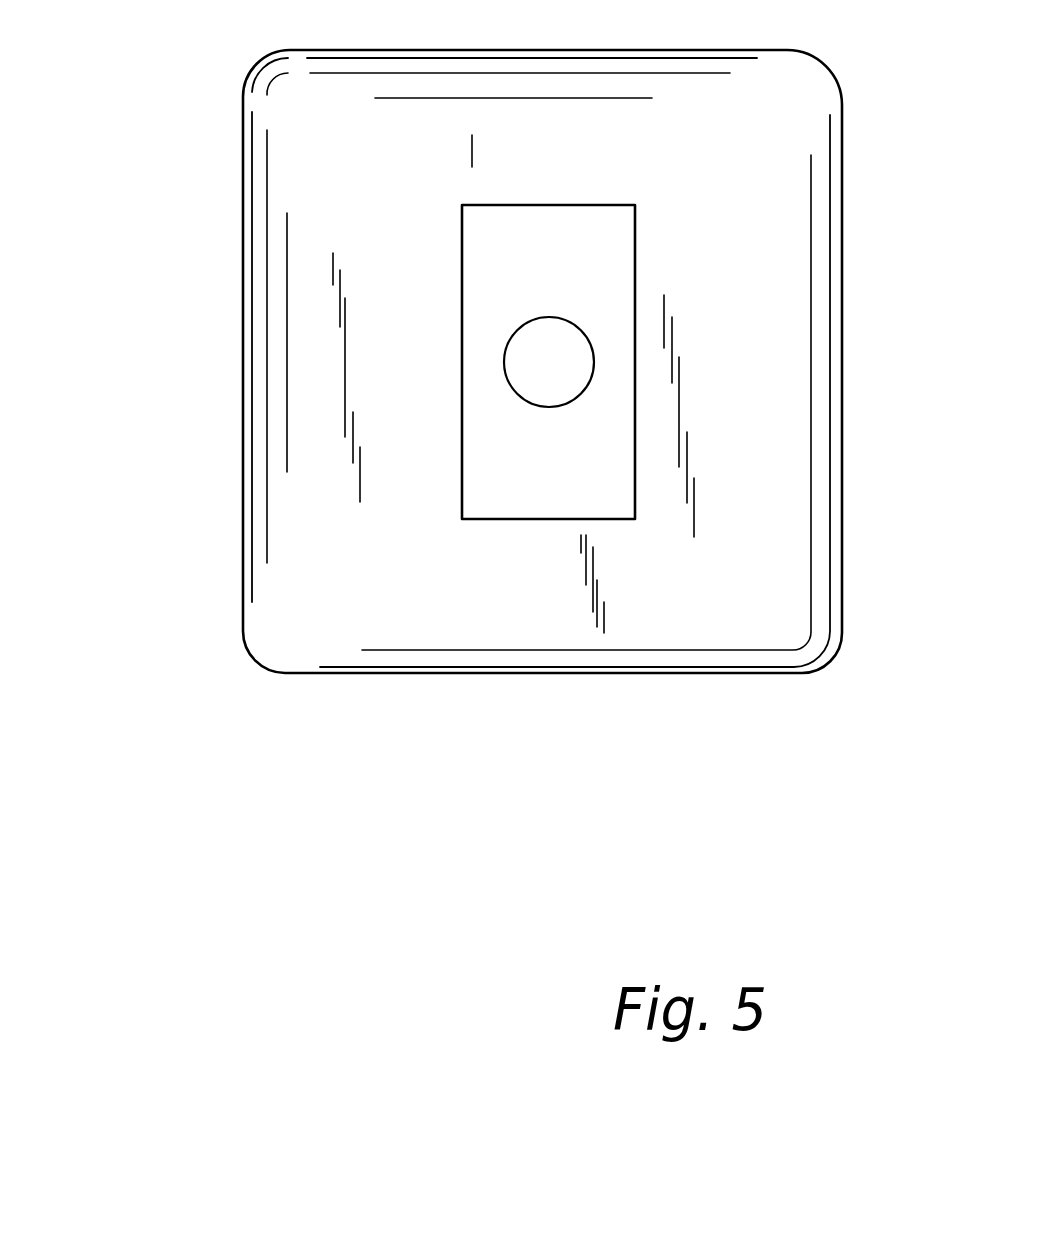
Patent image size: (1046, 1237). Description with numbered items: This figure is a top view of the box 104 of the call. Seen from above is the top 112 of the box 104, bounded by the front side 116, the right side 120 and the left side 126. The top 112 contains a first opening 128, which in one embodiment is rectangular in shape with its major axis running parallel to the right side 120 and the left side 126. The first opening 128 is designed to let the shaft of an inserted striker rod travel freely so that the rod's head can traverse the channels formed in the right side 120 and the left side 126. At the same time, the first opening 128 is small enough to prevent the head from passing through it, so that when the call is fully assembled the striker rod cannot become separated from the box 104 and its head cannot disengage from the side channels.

The box 104 is at (390, 705).
The top 112 is at (340, 565).
The front side 116 is at (697, 688).
The right side 120 is at (858, 345).
The left side 126 is at (228, 272).
The first opening 128 is at (448, 335).